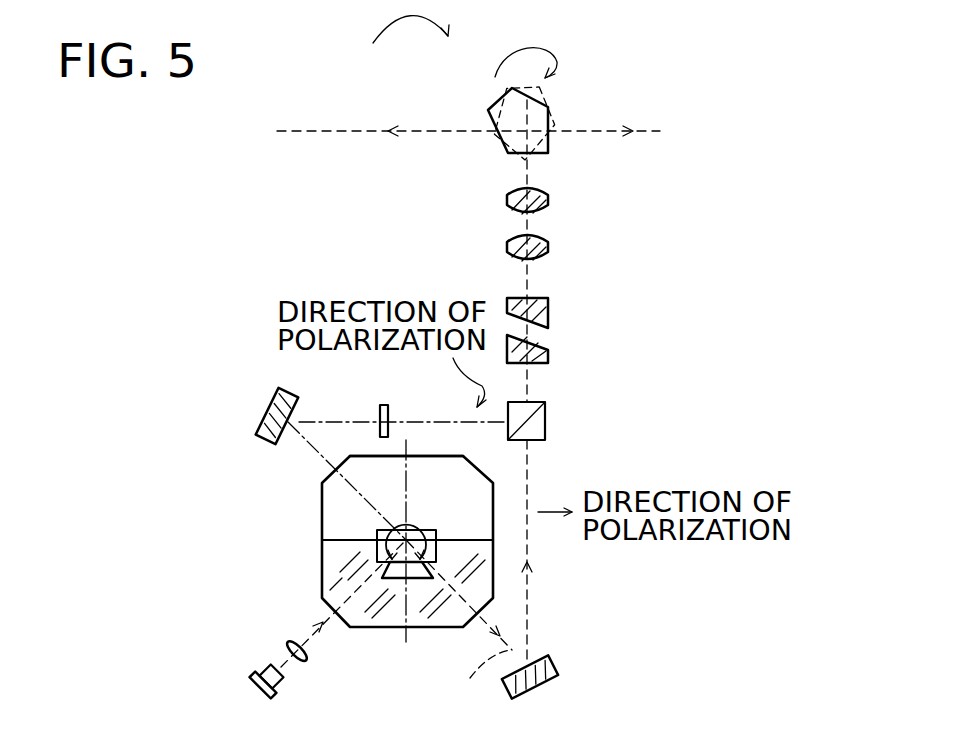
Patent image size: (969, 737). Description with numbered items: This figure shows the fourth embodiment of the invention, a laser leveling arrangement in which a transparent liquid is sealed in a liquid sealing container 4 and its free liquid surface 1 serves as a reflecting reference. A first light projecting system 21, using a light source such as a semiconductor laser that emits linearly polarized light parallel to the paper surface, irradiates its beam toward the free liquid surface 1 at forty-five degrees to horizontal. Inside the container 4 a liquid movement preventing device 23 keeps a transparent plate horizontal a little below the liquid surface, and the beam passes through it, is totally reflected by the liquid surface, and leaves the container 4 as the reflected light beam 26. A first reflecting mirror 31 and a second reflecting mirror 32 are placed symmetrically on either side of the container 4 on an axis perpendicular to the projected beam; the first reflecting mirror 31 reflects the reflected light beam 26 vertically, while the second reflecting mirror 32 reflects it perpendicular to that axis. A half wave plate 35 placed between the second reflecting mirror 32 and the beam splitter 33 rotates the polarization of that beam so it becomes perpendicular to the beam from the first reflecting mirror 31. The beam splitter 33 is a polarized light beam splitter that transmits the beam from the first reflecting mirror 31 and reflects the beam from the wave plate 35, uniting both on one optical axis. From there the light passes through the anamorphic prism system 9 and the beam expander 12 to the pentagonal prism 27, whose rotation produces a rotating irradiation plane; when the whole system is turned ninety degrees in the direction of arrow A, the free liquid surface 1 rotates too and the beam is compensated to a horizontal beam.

The arrow A is at (377, 33).
The pentagonal prism 27 is at (495, 106).
The beam expander 12 is at (563, 197).
The anamorphic prism system 9 is at (563, 313).
The beam splitter 33 is at (548, 413).
The second reflecting mirror 32 is at (264, 403).
The ½ wave plate 35 is at (389, 408).
The liquid sealing container 4 is at (367, 457).
The free liquid surface 1 is at (345, 540).
The liquid movement preventing device 23 is at (436, 530).
The first light projecting system 21 is at (292, 697).
The reflected light beam 26 is at (472, 678).
The first reflecting mirror 31 is at (558, 664).